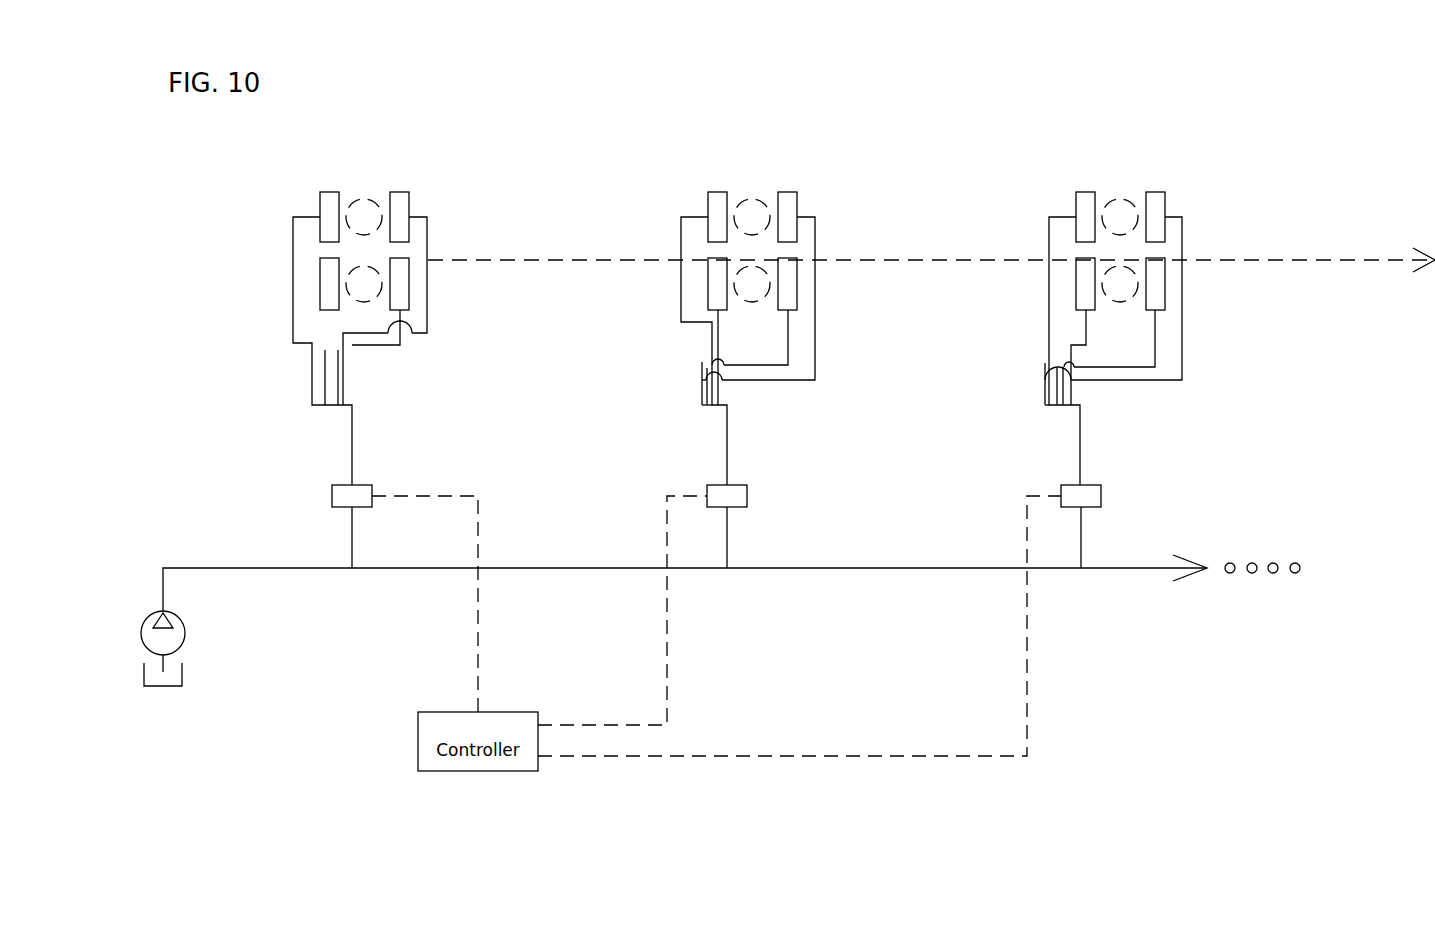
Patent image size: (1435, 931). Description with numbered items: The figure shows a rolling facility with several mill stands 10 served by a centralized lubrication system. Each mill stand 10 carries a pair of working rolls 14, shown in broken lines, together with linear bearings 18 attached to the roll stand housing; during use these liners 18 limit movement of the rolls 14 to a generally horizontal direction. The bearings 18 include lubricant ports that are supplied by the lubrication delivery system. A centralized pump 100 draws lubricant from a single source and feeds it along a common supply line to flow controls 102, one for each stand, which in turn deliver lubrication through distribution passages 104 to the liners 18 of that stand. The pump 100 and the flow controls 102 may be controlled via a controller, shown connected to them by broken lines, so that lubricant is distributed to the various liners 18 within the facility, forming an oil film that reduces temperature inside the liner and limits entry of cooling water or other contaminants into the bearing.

The mill stand 10 is at (450, 140).
The working rolls 14 is at (383, 281).
The linear bearings 18 is at (329, 204).
The pump 100 is at (184, 635).
The flow controls 102 is at (330, 493).
The lubricant manifold 104 is at (373, 347).